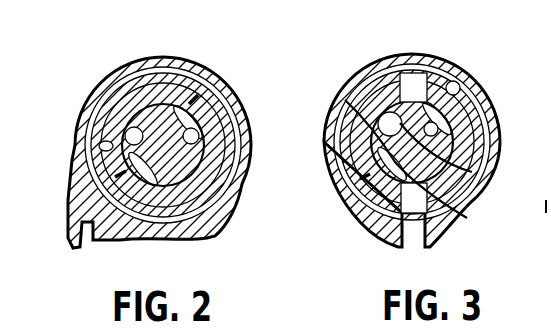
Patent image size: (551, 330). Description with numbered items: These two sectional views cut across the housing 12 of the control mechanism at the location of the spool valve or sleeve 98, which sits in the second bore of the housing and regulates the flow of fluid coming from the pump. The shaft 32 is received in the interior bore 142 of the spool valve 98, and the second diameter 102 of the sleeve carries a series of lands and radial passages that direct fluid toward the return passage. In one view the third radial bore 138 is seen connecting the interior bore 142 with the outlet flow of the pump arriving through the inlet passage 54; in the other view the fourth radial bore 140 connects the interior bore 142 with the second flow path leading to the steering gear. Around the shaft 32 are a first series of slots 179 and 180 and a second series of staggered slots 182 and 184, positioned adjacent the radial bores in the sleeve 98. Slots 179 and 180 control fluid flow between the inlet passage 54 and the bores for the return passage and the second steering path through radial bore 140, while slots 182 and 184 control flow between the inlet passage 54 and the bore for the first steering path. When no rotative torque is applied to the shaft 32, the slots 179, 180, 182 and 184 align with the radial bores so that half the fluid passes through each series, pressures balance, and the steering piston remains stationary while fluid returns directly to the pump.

In FIG. 2, the housing 12 is at (171, 60).
In FIG. 3, the housing 12 is at (402, 60).
In FIG. 2, the shaft 32 is at (175, 172).
In FIG. 3, the shaft 32 is at (420, 163).
In FIG. 3, the inlet passage 54 is at (415, 237).
In FIG. 2, the spool valve 98 is at (137, 100).
In FIG. 3, the spool valve 98 is at (470, 147).
In FIG. 2, the second diameter 102 is at (100, 150).
In FIG. 3, the second diameter 102 is at (458, 93).
In FIG. 3, the third radial bore 138 is at (417, 78).
In FIG. 2, the fourth radial bore 140 is at (202, 103).
In FIG. 2, the interior bore 142 is at (125, 136).
In FIG. 3, the interior bore 142 is at (372, 120).
In FIG. 2, the slot 179 is at (242, 111).
In FIG. 3, the slot 179 is at (480, 110).
In FIG. 2, the slot 180 is at (112, 174).
In FIG. 3, the slot 180 is at (358, 178).
In FIG. 3, the staggered slot 182 is at (373, 145).
In FIG. 3, the staggered slot 184 is at (472, 172).